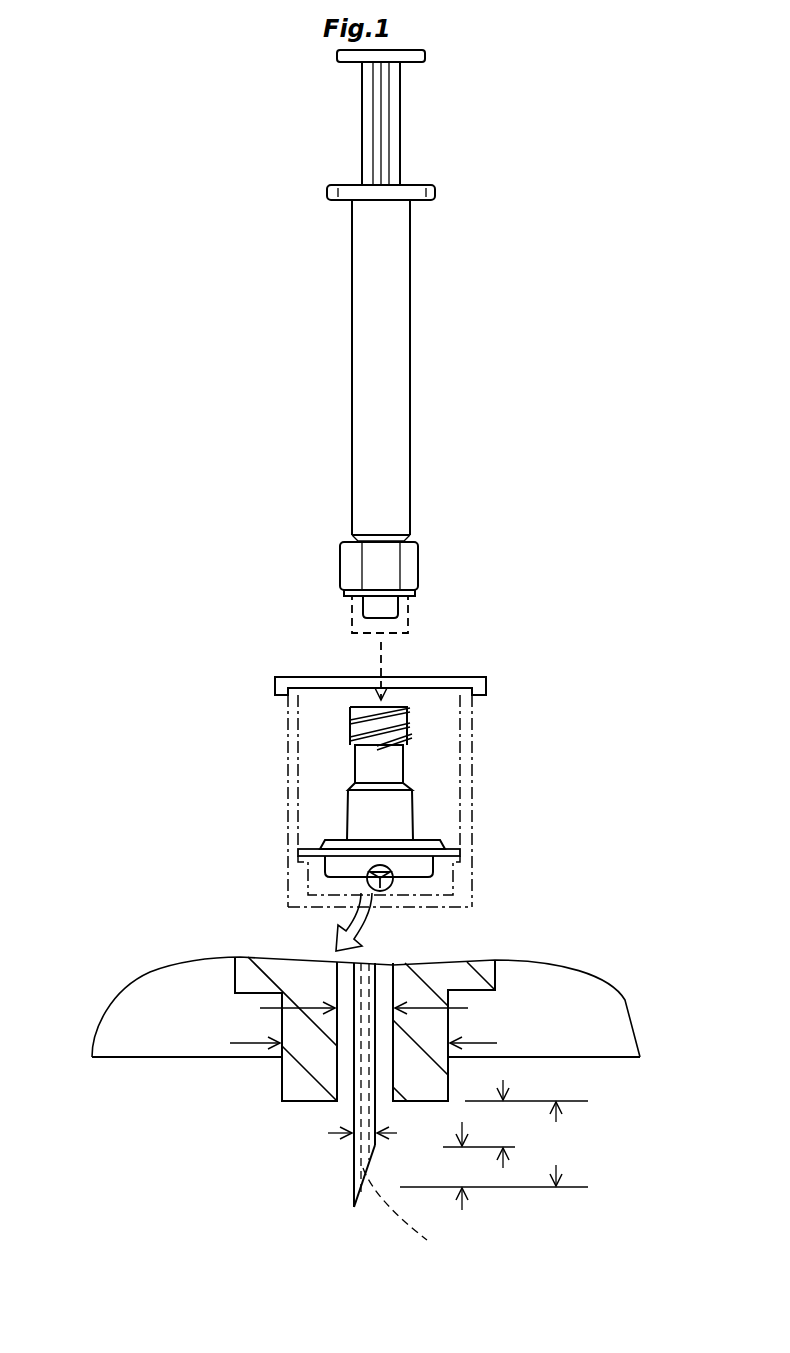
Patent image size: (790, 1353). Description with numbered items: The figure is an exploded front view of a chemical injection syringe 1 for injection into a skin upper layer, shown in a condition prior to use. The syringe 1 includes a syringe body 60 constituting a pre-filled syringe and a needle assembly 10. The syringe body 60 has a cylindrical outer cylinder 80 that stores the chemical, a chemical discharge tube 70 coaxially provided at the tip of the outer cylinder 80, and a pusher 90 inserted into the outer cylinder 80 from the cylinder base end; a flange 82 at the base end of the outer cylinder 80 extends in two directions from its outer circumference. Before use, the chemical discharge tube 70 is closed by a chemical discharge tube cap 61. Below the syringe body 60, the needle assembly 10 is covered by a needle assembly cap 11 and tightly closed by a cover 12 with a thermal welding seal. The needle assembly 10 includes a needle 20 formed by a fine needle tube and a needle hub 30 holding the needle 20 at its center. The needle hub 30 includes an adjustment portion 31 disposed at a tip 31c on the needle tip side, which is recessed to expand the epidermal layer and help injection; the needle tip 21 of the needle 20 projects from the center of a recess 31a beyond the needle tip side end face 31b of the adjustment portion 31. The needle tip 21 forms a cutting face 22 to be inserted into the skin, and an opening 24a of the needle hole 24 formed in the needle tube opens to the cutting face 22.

The chemical injection syringe 1 is at (245, 120).
The syringe body 60 is at (203, 248).
The pusher 90 is at (360, 145).
The flange 82 is at (436, 194).
The outer cylinder 80 is at (348, 324).
The chemical discharge tube 70 is at (348, 615).
The chemical discharge tube cap 61 is at (398, 625).
The cover 12 is at (445, 682).
The needle assembly cap 11 is at (467, 817).
The needle assembly 10 is at (348, 758).
The needle hub 30 is at (166, 956).
The adjustment portion 31 is at (314, 971).
The recess 31a is at (347, 1103).
The needle tip side end face 31b is at (297, 1102).
The tip 31c is at (283, 1101).
The needle 20 is at (350, 1166).
The needle tip 21 is at (355, 1185).
The cutting face 22 is at (365, 1170).
The needle hole 24 is at (367, 962).
The opening 24a is at (406, 1218).